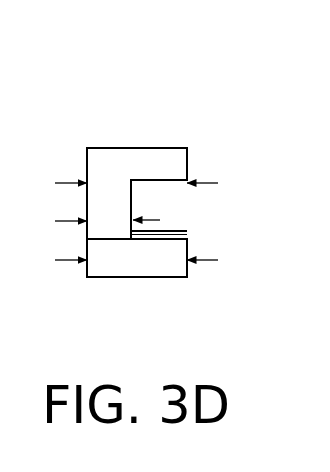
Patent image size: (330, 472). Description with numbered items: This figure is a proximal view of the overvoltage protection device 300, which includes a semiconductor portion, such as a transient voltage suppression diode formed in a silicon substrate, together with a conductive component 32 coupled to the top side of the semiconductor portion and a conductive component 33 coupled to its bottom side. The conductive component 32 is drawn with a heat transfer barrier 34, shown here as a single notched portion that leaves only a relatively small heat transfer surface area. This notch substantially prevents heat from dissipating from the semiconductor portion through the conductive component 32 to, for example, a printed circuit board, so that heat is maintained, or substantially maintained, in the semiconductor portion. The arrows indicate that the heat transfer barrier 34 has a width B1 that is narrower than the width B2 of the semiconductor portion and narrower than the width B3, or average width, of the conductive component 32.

The overvoltage protection device 300 is at (130, 122).
The conductive component 32 is at (137, 273).
The conductive component 33 is at (187, 234).
The heat transfer barrier 34 is at (153, 203).
The width of the heat transfer barrier B1 is at (91, 221).
The width of the semiconductor portion B2 is at (120, 183).
The width of the conductive component B3 is at (120, 261).